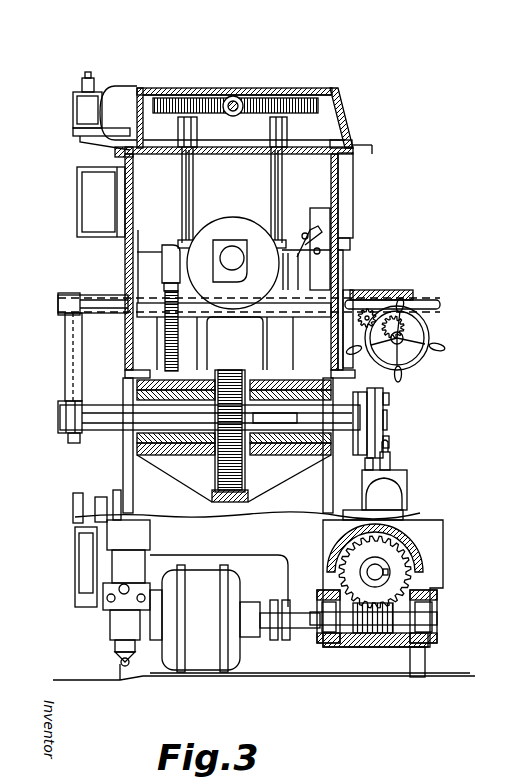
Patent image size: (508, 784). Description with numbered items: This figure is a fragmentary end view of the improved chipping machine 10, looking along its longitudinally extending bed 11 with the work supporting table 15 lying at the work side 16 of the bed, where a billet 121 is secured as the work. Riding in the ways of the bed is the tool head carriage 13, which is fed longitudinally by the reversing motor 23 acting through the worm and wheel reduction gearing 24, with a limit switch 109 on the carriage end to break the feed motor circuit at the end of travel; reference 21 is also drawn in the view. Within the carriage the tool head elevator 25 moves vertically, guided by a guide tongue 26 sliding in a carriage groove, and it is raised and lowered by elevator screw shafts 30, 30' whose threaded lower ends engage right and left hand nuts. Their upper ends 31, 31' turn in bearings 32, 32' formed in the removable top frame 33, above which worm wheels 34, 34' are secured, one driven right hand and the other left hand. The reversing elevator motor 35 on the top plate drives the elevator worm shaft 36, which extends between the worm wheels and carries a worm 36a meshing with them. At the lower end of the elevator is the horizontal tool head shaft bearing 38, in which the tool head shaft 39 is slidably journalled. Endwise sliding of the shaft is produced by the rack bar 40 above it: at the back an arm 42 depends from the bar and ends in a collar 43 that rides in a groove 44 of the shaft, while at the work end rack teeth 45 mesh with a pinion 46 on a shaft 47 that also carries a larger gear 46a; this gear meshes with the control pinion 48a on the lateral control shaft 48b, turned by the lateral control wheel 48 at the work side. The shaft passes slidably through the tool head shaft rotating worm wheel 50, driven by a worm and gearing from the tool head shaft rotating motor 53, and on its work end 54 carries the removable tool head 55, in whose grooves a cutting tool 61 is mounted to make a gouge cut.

The chipping machine 10 is at (353, 174).
The bed 11 is at (443, 555).
The tool head carriage 13 is at (343, 247).
The work supporting table 15 is at (432, 520).
The work side 16 is at (440, 582).
The frame 21 is at (7, 268).
The reversing motor 23 is at (238, 648).
The worm and wheel reduction gearing 24 is at (352, 630).
The tool head elevator 25 is at (165, 255).
The guide tongue 26 is at (125, 270).
The elevator screw shaft 30 is at (202, 195).
The elevator screw shaft 30' is at (261, 195).
The upper end of screw shaft 31 is at (198, 197).
The upper end of screw shaft 31' is at (265, 197).
The bearing 32 is at (175, 132).
The bearing 32' is at (292, 132).
The top frame 33 is at (338, 118).
The worm wheel 34 is at (235, 86).
The worm wheel 34' is at (294, 80).
The reversing elevator motor 35 is at (122, 110).
The elevator worm shaft 36 is at (238, 102).
The worm 36a is at (233, 100).
The tool head shaft bearing 38 is at (272, 404).
The tool head shaft 39 is at (277, 438).
The rack bar 40 is at (103, 306).
The arm 42 is at (65, 357).
The collar 43 is at (68, 443).
The groove 44 is at (58, 414).
The rack teeth 45 is at (412, 300).
The pinion 46 is at (368, 308).
The gear 46a is at (402, 372).
The shaft 47 is at (356, 354).
The lateral control wheel 48 is at (428, 350).
The control pinion 48a is at (404, 327).
The lateral control shaft 48b is at (446, 343).
The tool head shaft rotating worm wheel 50 is at (234, 502).
The tool head shaft rotating motor 53 is at (233, 263).
The work end 54 is at (323, 416).
The tool head 55 is at (375, 410).
The cutting tool 61 is at (365, 466).
The limit switch 109 is at (75, 498).
The billet 121 is at (407, 472).